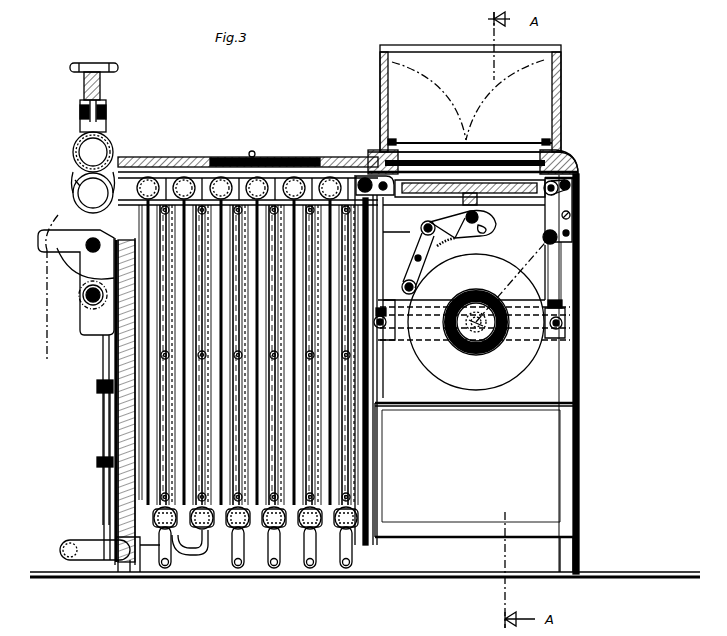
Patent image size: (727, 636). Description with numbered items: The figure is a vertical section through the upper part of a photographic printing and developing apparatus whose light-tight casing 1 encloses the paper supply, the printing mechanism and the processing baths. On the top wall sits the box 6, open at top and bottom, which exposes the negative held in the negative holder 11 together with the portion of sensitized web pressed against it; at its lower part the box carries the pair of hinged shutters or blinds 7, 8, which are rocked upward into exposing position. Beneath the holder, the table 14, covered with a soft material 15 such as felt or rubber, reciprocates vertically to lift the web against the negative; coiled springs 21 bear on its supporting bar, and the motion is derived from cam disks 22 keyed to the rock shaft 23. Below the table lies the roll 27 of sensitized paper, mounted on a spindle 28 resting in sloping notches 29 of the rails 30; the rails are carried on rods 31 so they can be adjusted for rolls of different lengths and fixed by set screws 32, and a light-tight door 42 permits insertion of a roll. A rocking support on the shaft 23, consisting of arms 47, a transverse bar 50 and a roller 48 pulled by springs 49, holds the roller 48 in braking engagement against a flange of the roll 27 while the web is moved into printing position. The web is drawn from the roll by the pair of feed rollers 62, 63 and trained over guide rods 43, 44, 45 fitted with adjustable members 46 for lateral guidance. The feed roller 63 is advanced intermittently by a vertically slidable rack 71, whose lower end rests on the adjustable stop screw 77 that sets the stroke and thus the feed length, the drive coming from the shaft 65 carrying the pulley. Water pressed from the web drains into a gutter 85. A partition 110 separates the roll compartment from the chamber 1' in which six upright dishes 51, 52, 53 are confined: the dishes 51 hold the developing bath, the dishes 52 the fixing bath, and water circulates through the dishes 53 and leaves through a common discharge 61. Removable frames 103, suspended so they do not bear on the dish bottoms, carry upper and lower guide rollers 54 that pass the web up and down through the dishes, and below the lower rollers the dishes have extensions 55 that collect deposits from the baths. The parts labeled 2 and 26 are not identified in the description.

The casing 1 is at (474, 483).
The chamber 1' is at (97, 401).
The base 2 is at (575, 565).
The box 6 is at (561, 115).
The hinged shutter 7 is at (432, 134).
The hinged shutter 8 is at (516, 142).
The negative holder 11 is at (574, 158).
The table 14 is at (520, 197).
The soft material 15 is at (428, 196).
The coiled springs 21 is at (494, 232).
The cam disks 22 is at (478, 217).
The rock shaft 23 is at (421, 228).
The axis line 26 is at (385, 477).
The roll 27 is at (528, 386).
The spindle 28 is at (476, 322).
The sloping notches 29 is at (468, 312).
The rails 30 is at (395, 335).
The rods 31 is at (585, 324).
The set screws 32 is at (562, 306).
The light-tight door 42 is at (579, 278).
The guide rod 43 is at (557, 236).
The guide rod 44 is at (570, 198).
The guide rod 45 is at (352, 176).
The adjustable members 46 is at (578, 182).
The arms 47 is at (415, 250).
The roller 48 is at (402, 288).
The springs 49 is at (445, 250).
The transverse bar 50 is at (414, 261).
The dishes 51 is at (318, 530).
The dishes 52 is at (244, 530).
The dishes 53 is at (172, 535).
The guide rollers 54 is at (375, 548).
The extensions 55 is at (296, 530).
The common discharge 61 is at (96, 542).
The feed roller 62 is at (80, 151).
The feed roller 63 is at (78, 191).
The shaft 65 is at (86, 296).
The rack 71 is at (103, 350).
The screw 77 is at (102, 426).
The gutter 85 is at (62, 230).
The removable frames 103 is at (400, 432).
The partition 110 is at (350, 470).